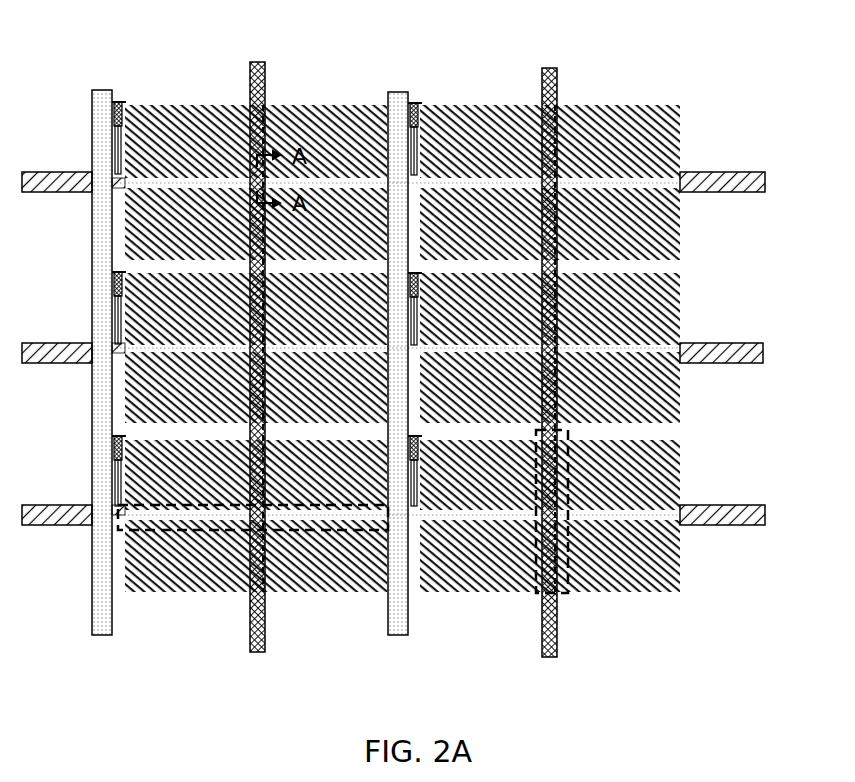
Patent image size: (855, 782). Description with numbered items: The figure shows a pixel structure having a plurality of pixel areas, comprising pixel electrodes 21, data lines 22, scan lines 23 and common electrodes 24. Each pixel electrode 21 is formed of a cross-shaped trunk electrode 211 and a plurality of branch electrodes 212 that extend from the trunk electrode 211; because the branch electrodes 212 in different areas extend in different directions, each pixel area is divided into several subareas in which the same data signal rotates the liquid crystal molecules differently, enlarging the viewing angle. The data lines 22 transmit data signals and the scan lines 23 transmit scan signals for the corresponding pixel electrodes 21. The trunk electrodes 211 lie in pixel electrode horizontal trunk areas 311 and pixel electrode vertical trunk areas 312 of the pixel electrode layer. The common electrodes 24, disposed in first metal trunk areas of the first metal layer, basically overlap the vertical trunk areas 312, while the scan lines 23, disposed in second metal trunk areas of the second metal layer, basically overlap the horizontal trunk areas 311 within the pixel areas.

The pixel electrode 21 is at (621, 348).
The trunk electrode 211 is at (660, 350).
The branch electrode 212 is at (650, 305).
The data line 22 is at (398, 108).
The scan line 23 is at (733, 185).
The common electrode 24 is at (552, 80).
The pixel electrode horizontal trunk area 311 is at (313, 512).
The pixel electrode vertical trunk area 312 is at (556, 595).